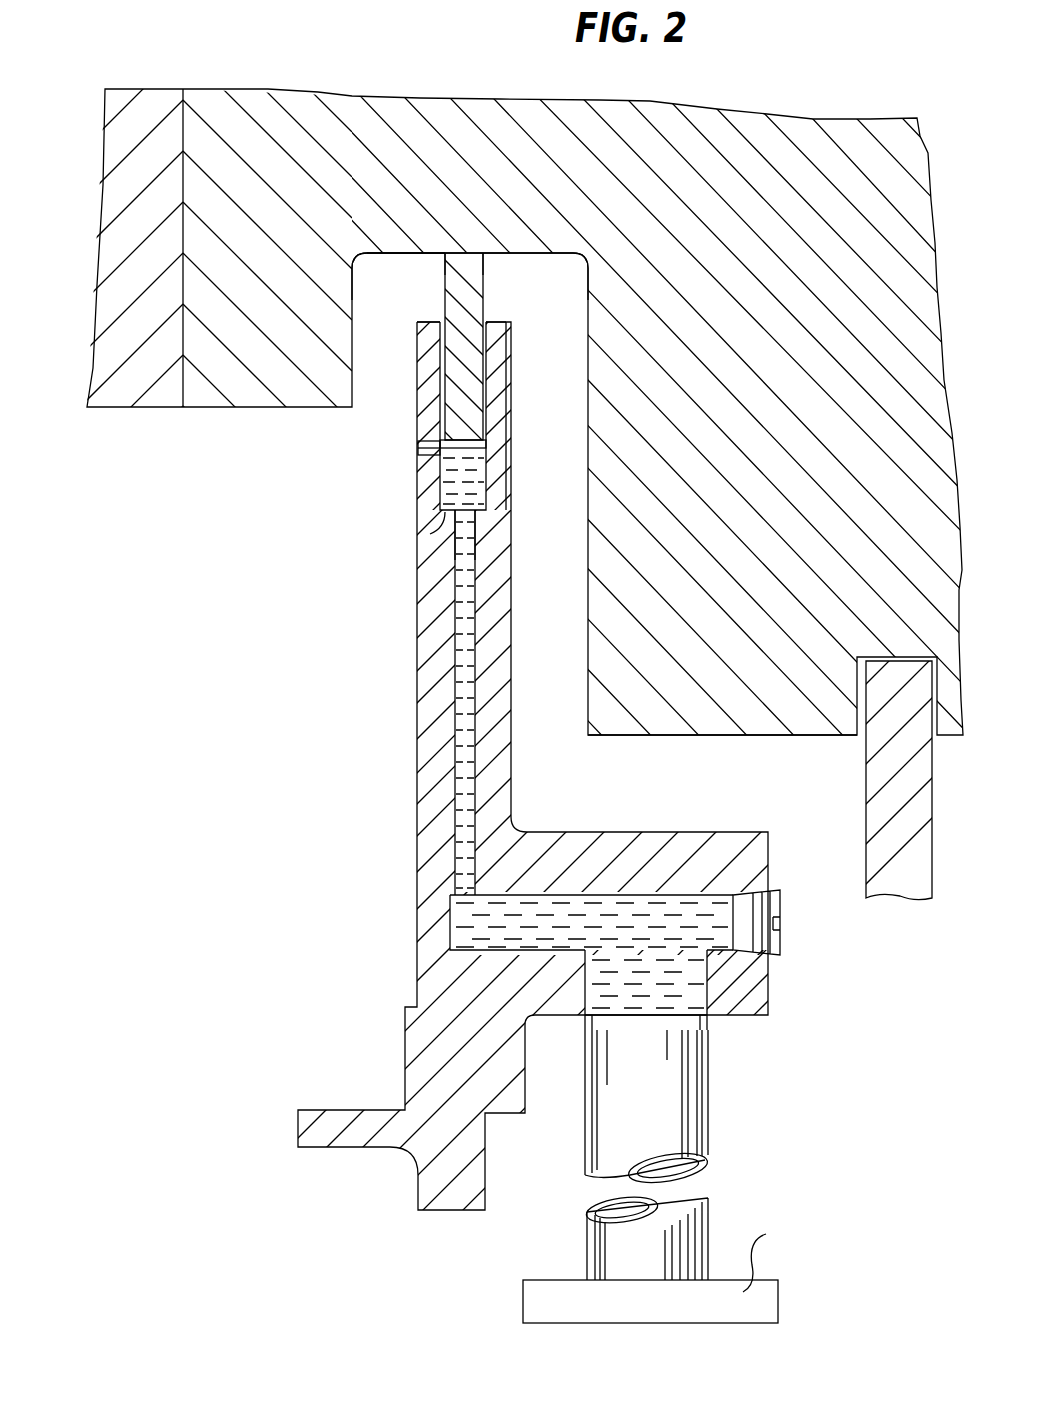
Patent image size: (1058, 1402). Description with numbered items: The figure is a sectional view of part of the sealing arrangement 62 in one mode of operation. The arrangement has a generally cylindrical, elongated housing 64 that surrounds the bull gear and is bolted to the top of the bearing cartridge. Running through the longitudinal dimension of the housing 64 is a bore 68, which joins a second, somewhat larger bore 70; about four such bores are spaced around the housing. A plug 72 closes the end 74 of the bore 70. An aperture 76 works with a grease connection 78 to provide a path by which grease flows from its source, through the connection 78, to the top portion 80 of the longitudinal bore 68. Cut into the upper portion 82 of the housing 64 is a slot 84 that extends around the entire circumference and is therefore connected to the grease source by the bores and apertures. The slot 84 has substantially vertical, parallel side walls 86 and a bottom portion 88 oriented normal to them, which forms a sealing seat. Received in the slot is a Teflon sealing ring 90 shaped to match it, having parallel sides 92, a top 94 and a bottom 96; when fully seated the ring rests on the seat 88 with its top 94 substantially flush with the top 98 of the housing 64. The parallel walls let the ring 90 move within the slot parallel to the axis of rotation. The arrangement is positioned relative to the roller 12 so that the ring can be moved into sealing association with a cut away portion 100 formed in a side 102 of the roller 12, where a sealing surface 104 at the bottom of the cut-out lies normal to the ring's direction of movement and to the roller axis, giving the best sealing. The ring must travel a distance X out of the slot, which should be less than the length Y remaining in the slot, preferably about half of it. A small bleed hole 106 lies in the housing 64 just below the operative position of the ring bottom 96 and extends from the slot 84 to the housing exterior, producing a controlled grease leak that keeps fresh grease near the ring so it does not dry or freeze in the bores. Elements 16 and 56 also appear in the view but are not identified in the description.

The roller 12 is at (529, 410).
The adjacent block 16 is at (118, 188).
The locking member 56 is at (878, 775).
The sealing arrangement 62 is at (529, 689).
The housing 64 is at (497, 775).
The bore 68 is at (475, 625).
The second bore 70 is at (555, 908).
The plug 72 is at (783, 935).
The end 74 is at (712, 917).
The aperture 76 is at (700, 1017).
The grease connection 78 is at (697, 1098).
The top portion 80 is at (470, 545).
The upper portion 82 is at (460, 307).
The slot 84 is at (462, 461).
The side walls 86 is at (452, 392).
The bottom portion 88 is at (430, 533).
The sealing ring 90 is at (457, 333).
The sides 92 is at (447, 267).
The top 94 is at (468, 253).
The bottom 96 is at (440, 462).
The top 98 is at (490, 322).
The cut away portion 100 is at (372, 287).
The side 102 is at (680, 740).
The sealing surface 104 is at (380, 252).
The bleed hole 106 is at (430, 448).